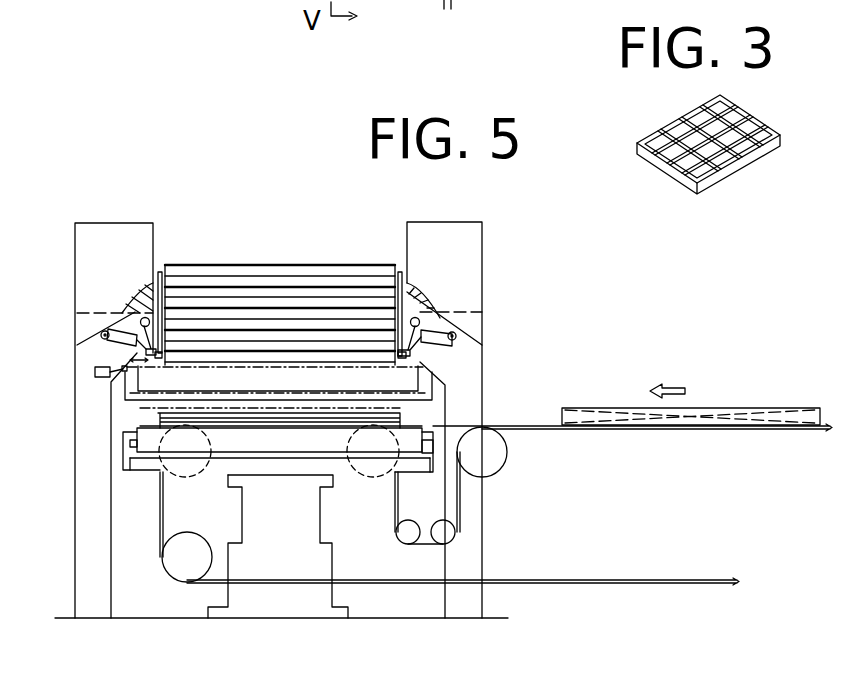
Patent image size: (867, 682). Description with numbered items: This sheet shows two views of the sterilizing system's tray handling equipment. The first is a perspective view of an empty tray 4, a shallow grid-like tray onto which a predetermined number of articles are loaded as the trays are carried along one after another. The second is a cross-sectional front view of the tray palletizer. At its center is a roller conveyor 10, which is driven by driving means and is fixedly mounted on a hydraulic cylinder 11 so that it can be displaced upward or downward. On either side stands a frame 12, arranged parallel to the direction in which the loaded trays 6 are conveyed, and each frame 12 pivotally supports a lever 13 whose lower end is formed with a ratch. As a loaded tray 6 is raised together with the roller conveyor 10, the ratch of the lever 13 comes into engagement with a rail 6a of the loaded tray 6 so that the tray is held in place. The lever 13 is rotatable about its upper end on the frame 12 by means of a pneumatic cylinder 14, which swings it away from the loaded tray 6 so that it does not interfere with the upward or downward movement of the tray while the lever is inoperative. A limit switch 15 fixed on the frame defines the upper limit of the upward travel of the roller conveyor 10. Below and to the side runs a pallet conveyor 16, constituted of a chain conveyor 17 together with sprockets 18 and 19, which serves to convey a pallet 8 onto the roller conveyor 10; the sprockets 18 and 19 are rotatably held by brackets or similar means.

In FIG. 3, the empty tray 4 is at (738, 118).
In FIG. 5, the loaded tray 6 is at (250, 265).
In FIG. 5, the rail 6a is at (162, 268).
In FIG. 5, the pallet 8 is at (596, 412).
In FIG. 5, the roller conveyor 10 is at (148, 443).
In FIG. 5, the hydraulic cylinder 11 is at (281, 597).
In FIG. 5, the frame 12 is at (113, 228).
In FIG. 5, the lever 13 is at (138, 353).
In FIG. 5, the pneumatic cylinder 14 is at (85, 294).
In FIG. 5, the limit switch 15 is at (93, 373).
In FIG. 5, the pallet conveyor 16 is at (714, 392).
In FIG. 5, the chain conveyor 17 is at (528, 423).
In FIG. 5, the sprocket 18 is at (187, 476).
In FIG. 5, the sprocket 19 is at (372, 478).